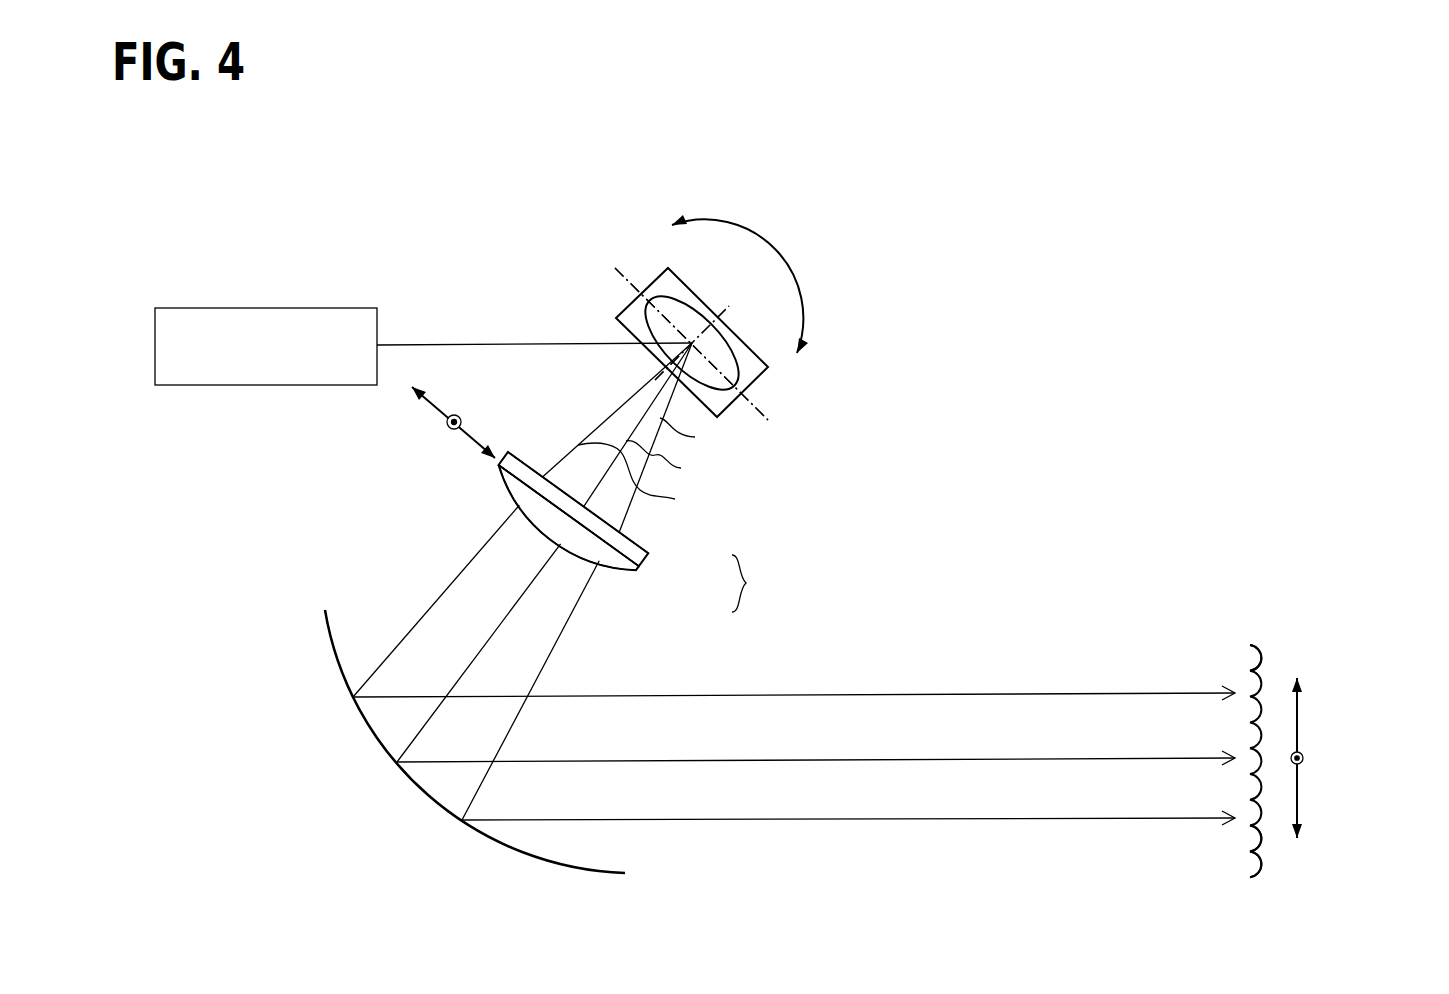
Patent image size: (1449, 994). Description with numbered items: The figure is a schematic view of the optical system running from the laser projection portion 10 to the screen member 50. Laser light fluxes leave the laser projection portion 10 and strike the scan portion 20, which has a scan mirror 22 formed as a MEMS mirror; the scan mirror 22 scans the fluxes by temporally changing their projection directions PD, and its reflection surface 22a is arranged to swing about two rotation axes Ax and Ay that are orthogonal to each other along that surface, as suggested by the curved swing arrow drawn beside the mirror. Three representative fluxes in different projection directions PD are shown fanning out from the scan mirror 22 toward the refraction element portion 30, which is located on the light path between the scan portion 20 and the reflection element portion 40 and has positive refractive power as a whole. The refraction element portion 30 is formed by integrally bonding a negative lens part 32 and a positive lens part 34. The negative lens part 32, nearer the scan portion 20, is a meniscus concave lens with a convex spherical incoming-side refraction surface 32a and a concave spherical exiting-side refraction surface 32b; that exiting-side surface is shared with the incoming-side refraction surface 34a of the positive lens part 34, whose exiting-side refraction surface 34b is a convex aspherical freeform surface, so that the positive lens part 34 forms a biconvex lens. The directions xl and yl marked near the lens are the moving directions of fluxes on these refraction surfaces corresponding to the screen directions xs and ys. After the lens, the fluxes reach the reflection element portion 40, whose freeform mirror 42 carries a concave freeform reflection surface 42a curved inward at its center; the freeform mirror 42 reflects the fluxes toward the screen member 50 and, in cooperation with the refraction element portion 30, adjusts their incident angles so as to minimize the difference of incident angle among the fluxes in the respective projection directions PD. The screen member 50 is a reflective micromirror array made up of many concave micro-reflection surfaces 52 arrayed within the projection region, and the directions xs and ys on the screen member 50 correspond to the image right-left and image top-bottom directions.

The laser projection portion 10 is at (255, 308).
The scan portion 20 is at (676, 315).
The scan mirror 22 is at (655, 272).
The reflecting surface of scanning mirror 22a is at (657, 325).
The refraction element portion 30 is at (605, 530).
The negative lens part 32 is at (641, 560).
The incoming-side refraction surface 32a is at (533, 470).
The exiting-side refraction surface 32b is at (521, 481).
The positive lens part 34 is at (637, 575).
The incoming-side refraction surface 34a is at (633, 559).
The exiting-side refraction surface 34b is at (620, 567).
The reflection element portion 40 is at (426, 724).
The freeform mirror 42 is at (330, 656).
The reflection surface 42a is at (343, 669).
The screen member 50 is at (1257, 648).
The micro-reflection surface 52 is at (1254, 667).
The projection direction PD is at (651, 467).
The rotation axis Ax is at (763, 410).
The rotation axis Ay is at (732, 311).
The direction xl is at (453, 404).
The direction yl is at (446, 408).
The direction xs is at (1357, 758).
The direction ys is at (1298, 712).